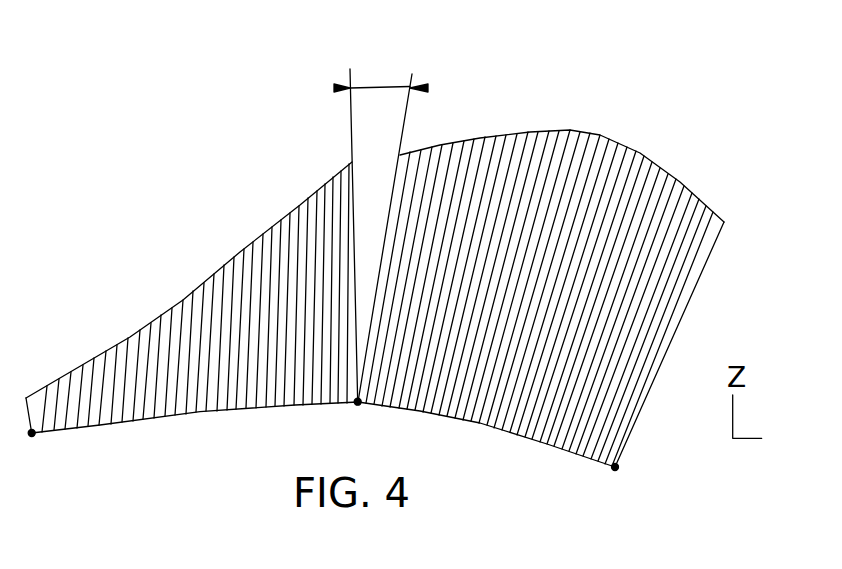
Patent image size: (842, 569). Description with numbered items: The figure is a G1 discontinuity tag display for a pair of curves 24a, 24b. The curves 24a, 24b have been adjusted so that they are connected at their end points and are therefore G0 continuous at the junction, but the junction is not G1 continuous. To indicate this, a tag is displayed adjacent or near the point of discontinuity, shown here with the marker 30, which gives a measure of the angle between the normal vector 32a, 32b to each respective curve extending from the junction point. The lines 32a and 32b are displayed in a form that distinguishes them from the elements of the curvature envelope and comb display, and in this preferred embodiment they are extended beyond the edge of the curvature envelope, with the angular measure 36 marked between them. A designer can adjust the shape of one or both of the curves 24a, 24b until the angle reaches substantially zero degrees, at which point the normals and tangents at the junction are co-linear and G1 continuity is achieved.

The curve 24a is at (193, 304).
The curve 24b is at (541, 300).
The normal vector 32a is at (348, 118).
The normal vector 32b is at (405, 123).
The gap between blade edges 36 is at (428, 88).
The angle G1 between blade edges 30 is at (273, 70).